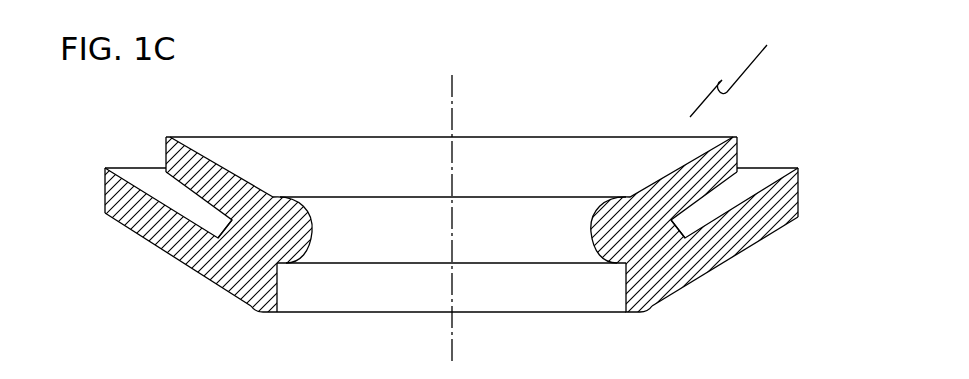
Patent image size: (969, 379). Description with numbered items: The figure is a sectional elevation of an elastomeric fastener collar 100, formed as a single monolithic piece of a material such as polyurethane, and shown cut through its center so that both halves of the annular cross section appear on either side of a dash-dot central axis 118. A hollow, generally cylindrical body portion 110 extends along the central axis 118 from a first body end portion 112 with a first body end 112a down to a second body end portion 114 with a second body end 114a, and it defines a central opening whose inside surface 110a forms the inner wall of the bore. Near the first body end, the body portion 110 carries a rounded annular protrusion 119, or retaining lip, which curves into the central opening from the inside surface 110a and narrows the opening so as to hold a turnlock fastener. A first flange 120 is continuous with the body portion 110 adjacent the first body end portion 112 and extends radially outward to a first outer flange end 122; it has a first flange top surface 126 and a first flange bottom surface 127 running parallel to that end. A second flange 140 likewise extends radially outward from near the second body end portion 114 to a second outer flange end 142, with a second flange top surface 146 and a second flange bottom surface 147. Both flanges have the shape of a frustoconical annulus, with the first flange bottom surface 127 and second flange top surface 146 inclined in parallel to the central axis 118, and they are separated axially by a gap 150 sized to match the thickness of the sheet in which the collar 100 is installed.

The fastener collar 100 is at (746, 73).
The body portion 110 is at (243, 270).
The inside surface 110a is at (624, 287).
The first body end portion 112 is at (284, 213).
The first body end 112a is at (279, 196).
The second body end portion 114 is at (277, 292).
The second body end 114a is at (266, 313).
The central axis 118 is at (454, 88).
The annular protrusion 119 is at (310, 236).
The first flange 120 is at (166, 148).
The first outer flange end 122 is at (165, 166).
The first flange top surface 126 is at (605, 161).
The first flange bottom surface 127 is at (658, 137).
The second flange 140 is at (122, 202).
The second outer flange end 142 is at (105, 187).
The second flange top surface 146 is at (700, 221).
The second flange bottom surface 147 is at (762, 237).
The gap 150 is at (215, 223).